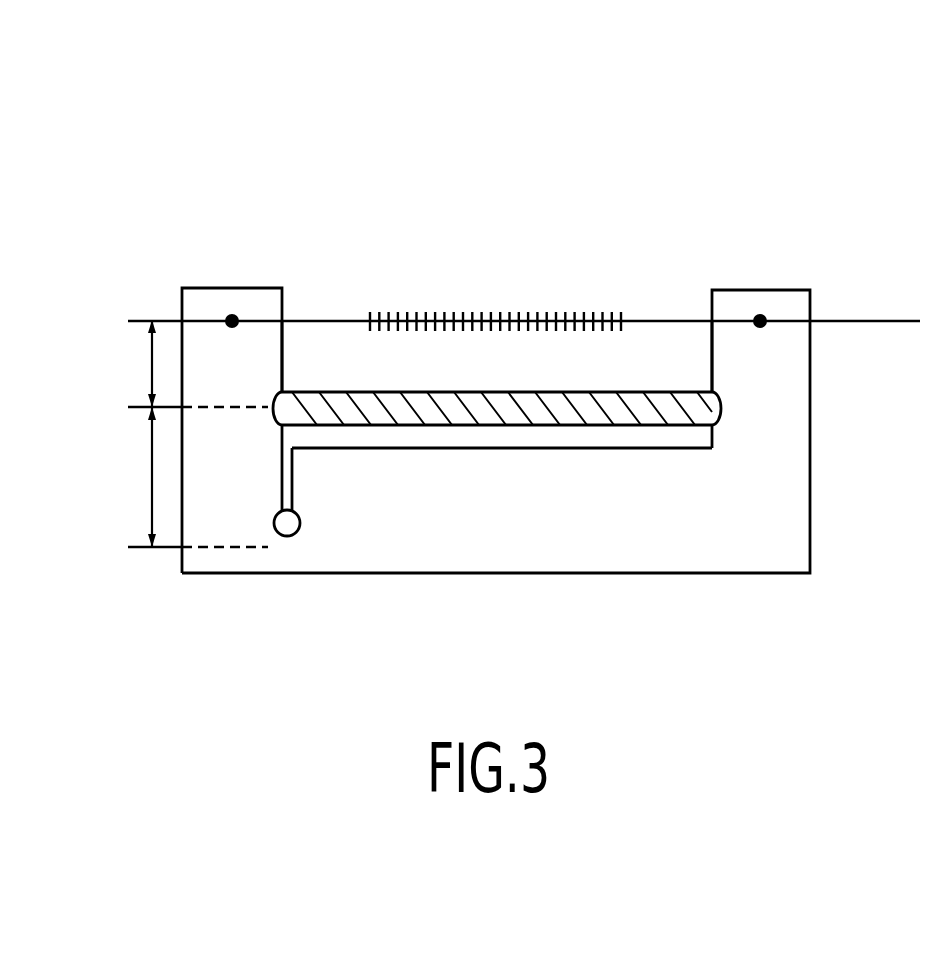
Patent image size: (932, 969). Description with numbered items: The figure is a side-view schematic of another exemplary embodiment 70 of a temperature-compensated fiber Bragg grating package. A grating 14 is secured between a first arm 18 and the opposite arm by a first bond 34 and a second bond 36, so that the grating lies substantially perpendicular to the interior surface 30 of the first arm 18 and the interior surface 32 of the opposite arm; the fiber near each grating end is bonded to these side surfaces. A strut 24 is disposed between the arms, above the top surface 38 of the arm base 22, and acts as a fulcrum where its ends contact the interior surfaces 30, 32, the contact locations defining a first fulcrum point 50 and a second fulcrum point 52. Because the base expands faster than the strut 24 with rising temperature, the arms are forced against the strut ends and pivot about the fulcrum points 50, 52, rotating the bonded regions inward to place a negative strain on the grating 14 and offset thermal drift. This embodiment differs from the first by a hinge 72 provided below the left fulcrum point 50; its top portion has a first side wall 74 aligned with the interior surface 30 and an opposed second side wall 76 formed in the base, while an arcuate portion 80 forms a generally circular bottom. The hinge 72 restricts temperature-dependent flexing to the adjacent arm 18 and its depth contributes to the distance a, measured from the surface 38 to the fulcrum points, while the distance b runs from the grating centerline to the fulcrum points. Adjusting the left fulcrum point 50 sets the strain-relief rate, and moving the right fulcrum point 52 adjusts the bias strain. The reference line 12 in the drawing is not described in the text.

The temperature-compensated grating package embodiment 70 is at (370, 188).
The reference plane 12 is at (137, 320).
The grating 14 is at (499, 283).
The first arm 18 is at (250, 288).
The arm base 22 is at (722, 289).
The first bond 34 is at (230, 319).
The second bond 36 is at (762, 318).
The strut 24 is at (460, 392).
The interior surface of first arm 30 is at (282, 365).
The interior surface of second arm 32 is at (712, 370).
The first fulcrum point 50 is at (273, 400).
The second fulcrum point 52 is at (720, 408).
The top surface of arm base 38 is at (525, 449).
The first side wall of hinge 74 is at (280, 489).
The second side wall of hinge 76 is at (293, 484).
The arcuate portion 80 is at (291, 537).
The hinge 72 is at (259, 555).
The distance a is at (150, 480).
The distance b is at (150, 360).